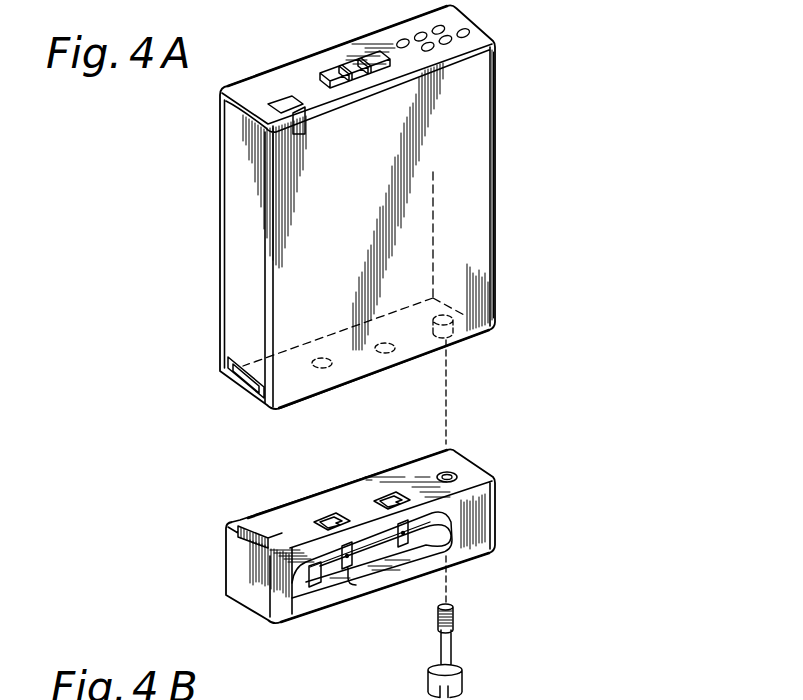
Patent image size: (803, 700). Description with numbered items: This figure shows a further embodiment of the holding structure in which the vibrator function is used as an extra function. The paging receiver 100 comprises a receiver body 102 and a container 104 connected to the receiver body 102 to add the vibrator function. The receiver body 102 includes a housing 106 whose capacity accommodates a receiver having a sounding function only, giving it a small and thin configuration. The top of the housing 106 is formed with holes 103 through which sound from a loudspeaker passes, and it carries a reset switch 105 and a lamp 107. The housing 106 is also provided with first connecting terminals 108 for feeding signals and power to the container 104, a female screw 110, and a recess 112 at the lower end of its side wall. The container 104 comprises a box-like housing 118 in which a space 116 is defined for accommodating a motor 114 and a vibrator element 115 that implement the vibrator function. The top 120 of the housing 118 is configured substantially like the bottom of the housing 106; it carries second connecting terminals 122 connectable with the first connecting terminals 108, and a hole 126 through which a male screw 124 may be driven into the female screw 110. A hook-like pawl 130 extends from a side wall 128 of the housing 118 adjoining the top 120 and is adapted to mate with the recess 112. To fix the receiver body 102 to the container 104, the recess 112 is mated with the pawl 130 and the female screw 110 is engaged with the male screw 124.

The paging receiver 100 is at (567, 137).
The receiver body 102 is at (501, 212).
The holes 103 is at (445, 35).
The container 104 is at (501, 475).
The reset switch 105 is at (346, 62).
The housing 106 is at (495, 88).
The lamp 107 is at (294, 107).
The first connecting terminals 108 is at (383, 354).
The female screw 110 is at (460, 337).
The recess 112 is at (222, 372).
The motor 114 is at (347, 556).
The vibrator element 115 is at (323, 573).
The space 116 is at (303, 597).
The box-like housing 118 is at (494, 511).
The top 120 is at (306, 520).
The second connecting terminals 122 is at (340, 505).
The male screw 124 is at (463, 680).
The hole 126 is at (448, 473).
The side wall 128 is at (246, 590).
The hook-like pawl 130 is at (250, 527).